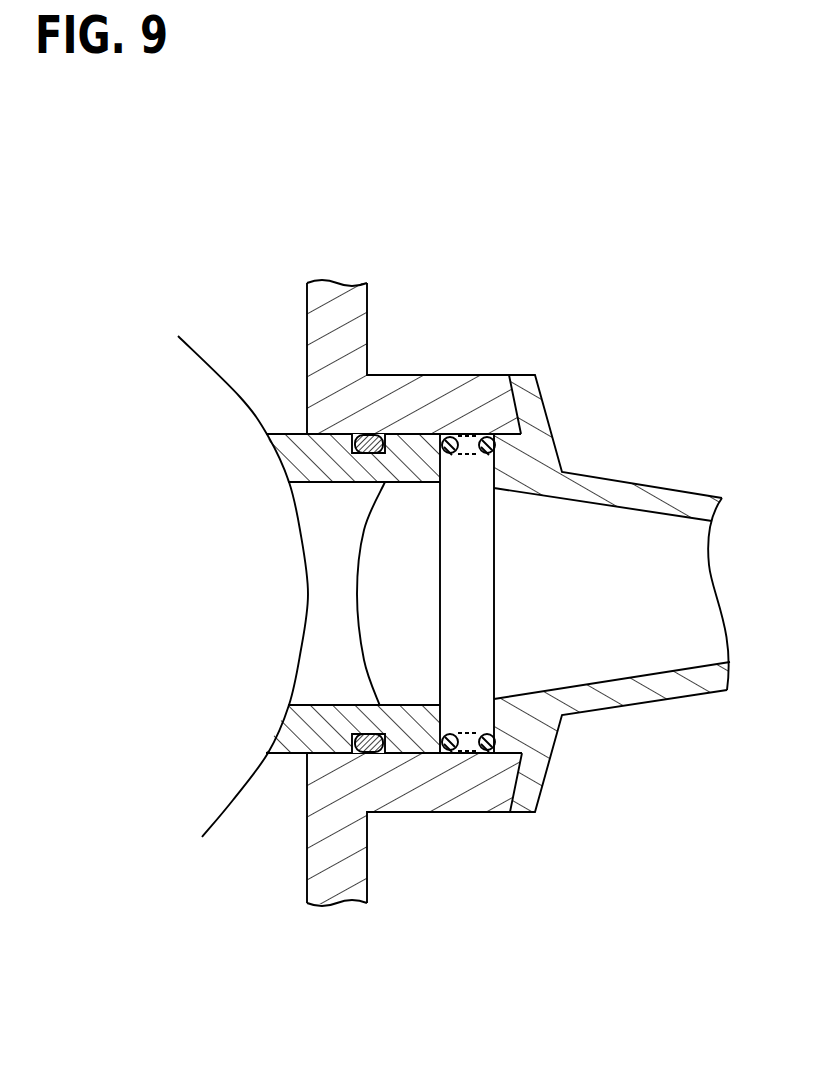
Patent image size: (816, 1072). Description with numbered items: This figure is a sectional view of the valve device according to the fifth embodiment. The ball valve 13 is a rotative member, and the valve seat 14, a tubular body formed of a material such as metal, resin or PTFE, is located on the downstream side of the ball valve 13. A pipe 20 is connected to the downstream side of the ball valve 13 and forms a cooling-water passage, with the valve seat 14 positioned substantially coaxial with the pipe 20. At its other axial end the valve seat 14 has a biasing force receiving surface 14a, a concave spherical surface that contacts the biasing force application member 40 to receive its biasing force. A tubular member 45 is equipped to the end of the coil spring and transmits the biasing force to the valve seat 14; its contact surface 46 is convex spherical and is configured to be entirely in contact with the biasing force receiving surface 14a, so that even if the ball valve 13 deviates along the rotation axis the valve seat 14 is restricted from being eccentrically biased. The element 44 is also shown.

The ball valve 13 is at (220, 393).
The valve seat 14 is at (376, 500).
The biasing force receiving surface 14a is at (388, 468).
The pipe 20 is at (523, 793).
The biasing force application member 40 is at (506, 503).
The ring 44 is at (489, 437).
The tubular member 45 is at (418, 450).
The contact surface 46 is at (388, 452).